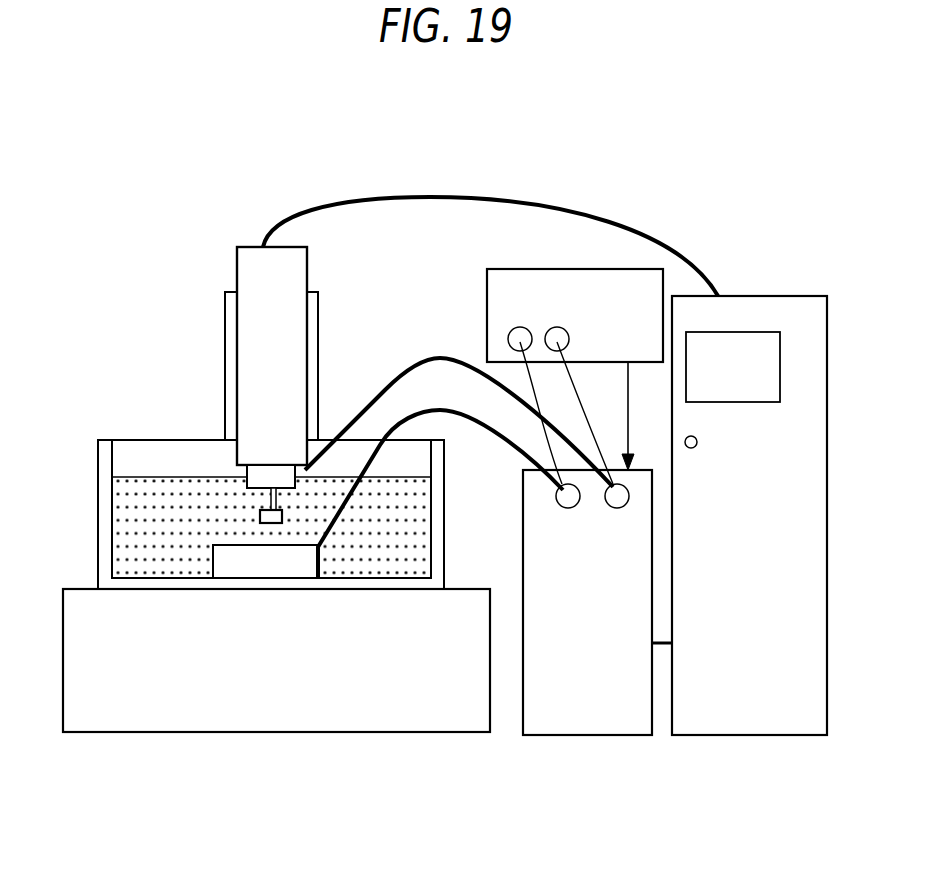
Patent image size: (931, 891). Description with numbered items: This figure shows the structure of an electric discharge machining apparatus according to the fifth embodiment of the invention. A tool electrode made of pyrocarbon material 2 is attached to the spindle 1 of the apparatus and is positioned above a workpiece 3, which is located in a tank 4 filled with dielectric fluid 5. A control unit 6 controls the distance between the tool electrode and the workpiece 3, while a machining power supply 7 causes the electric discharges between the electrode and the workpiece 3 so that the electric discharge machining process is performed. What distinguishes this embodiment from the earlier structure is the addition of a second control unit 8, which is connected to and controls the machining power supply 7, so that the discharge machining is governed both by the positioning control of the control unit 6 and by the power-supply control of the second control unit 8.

The spindle 1 is at (297, 308).
The pyrocarbon material 2 is at (257, 518).
The workpiece 3 is at (242, 570).
The tank 4 is at (110, 458).
The dielectric fluid 5 is at (417, 507).
The control unit 6 is at (724, 723).
The machining power supply 7 is at (588, 726).
The second control unit 8 is at (498, 337).